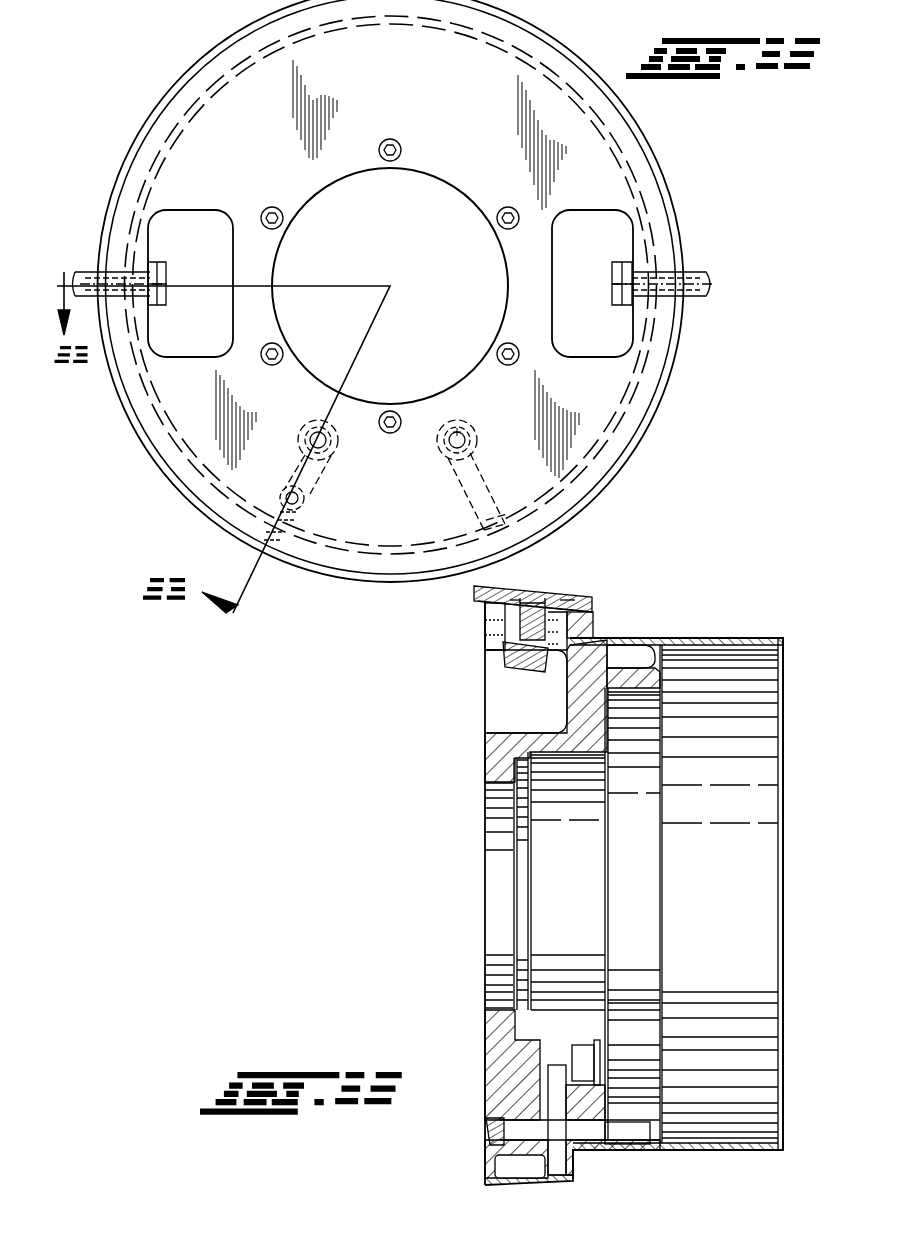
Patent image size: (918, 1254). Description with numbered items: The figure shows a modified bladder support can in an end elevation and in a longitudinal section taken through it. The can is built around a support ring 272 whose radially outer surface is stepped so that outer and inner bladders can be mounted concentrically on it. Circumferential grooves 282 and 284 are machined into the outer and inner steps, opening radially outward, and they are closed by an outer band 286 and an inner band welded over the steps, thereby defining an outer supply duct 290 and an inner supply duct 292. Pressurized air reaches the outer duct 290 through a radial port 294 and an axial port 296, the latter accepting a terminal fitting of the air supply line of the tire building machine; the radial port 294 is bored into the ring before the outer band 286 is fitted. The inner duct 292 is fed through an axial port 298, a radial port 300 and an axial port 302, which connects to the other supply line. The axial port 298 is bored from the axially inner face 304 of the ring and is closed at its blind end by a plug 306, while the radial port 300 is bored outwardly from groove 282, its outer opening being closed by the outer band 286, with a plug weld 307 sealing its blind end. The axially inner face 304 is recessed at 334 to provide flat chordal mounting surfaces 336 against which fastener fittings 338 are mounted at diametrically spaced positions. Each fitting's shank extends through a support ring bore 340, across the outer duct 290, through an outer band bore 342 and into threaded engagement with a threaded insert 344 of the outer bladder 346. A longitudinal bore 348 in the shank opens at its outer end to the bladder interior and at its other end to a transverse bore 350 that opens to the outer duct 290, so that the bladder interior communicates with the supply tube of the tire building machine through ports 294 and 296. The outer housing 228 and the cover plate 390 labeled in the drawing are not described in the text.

In FIG. 23, the housing 228 is at (760, 1143).
In FIG. 22, the support ring 272 is at (497, 62).
In FIG. 23, the support ring 272 is at (498, 770).
In FIG. 23, the circumferential groove 282 is at (488, 652).
In FIG. 23, the circumferential groove 284 is at (645, 1140).
In FIG. 23, the outer band 286 is at (565, 1180).
In FIG. 23, the outer supply duct 290 is at (522, 1175).
In FIG. 23, the inner supply duct 292 is at (657, 688).
In FIG. 22, the radial port 294 is at (495, 498).
In FIG. 22, the axial port 296 is at (464, 422).
In FIG. 22, the axial port 298 is at (302, 508).
In FIG. 23, the axial port 298 is at (520, 1126).
In FIG. 22, the radial port 300 is at (306, 478).
In FIG. 23, the radial port 300 is at (565, 1088).
In FIG. 22, the axial port 302 is at (330, 440).
In FIG. 23, the axial port 302 is at (582, 1046).
In FIG. 23, the axially inner face 304 is at (482, 874).
In FIG. 23, the plug 306 is at (490, 1128).
In FIG. 23, the plug weld 307 is at (568, 1160).
In FIG. 22, the recess 334 is at (177, 212).
In FIG. 23, the recess 334 is at (492, 740).
In FIG. 22, the flat chordal mounting surface 336 is at (152, 320).
In FIG. 23, the flat chordal mounting surface 336 is at (556, 668).
In FIG. 22, the fastener fitting 338 is at (700, 268).
In FIG. 23, the fastener fitting 338 is at (505, 678).
In FIG. 23, the support ring bore 340 is at (570, 638).
In FIG. 23, the outer band bore 342 is at (568, 618).
In FIG. 23, the threaded insert 344 is at (548, 600).
In FIG. 23, the outer bladder 346 is at (578, 600).
In FIG. 23, the longitudinal bore 348 is at (516, 598).
In FIG. 23, the transverse bore 350 is at (500, 620).
In FIG. 23, the cover plate 390 is at (495, 610).